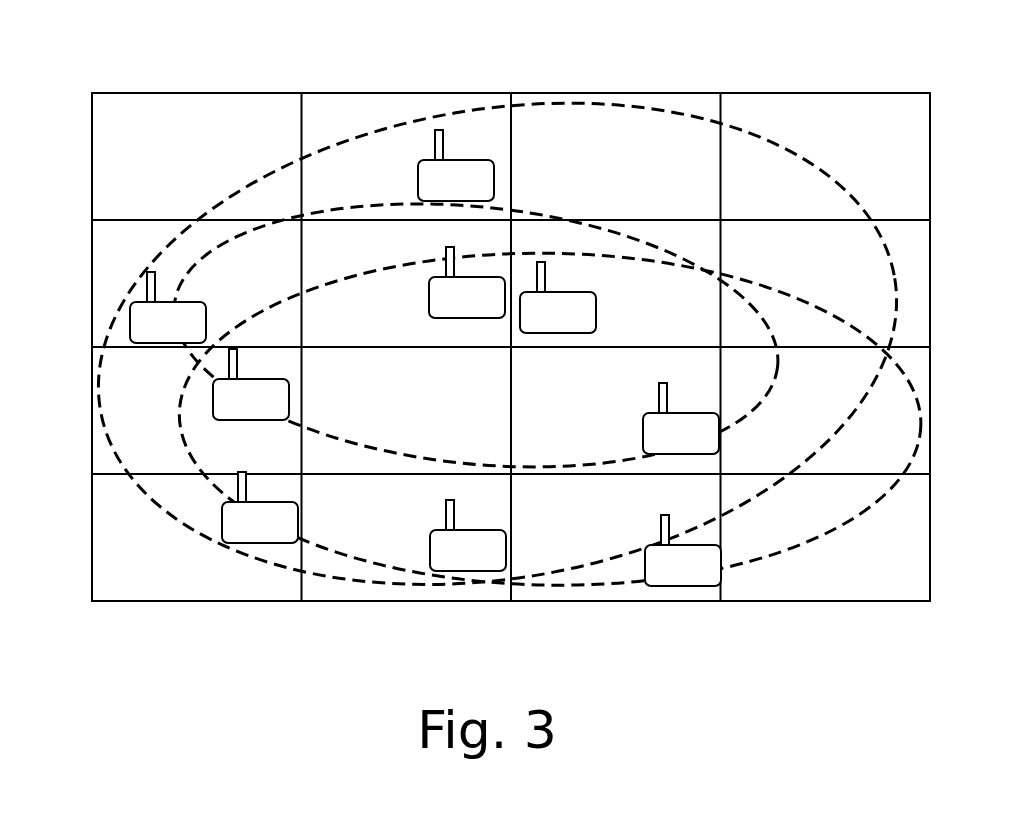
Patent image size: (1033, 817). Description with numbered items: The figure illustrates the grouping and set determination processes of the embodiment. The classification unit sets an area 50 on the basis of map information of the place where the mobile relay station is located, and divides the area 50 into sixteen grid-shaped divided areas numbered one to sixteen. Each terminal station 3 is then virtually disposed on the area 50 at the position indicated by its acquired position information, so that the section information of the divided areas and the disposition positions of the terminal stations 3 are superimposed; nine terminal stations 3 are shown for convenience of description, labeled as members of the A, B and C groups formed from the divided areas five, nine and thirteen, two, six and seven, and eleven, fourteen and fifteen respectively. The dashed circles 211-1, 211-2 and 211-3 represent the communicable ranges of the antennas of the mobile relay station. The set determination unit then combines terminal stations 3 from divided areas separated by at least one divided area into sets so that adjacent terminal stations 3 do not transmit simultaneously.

The area 50 is at (830, 93).
The terminal station 3 is at (466, 162).
The circle 211-1 is at (138, 488).
The circle 211-2 is at (333, 137).
The circle 211-3 is at (890, 490).